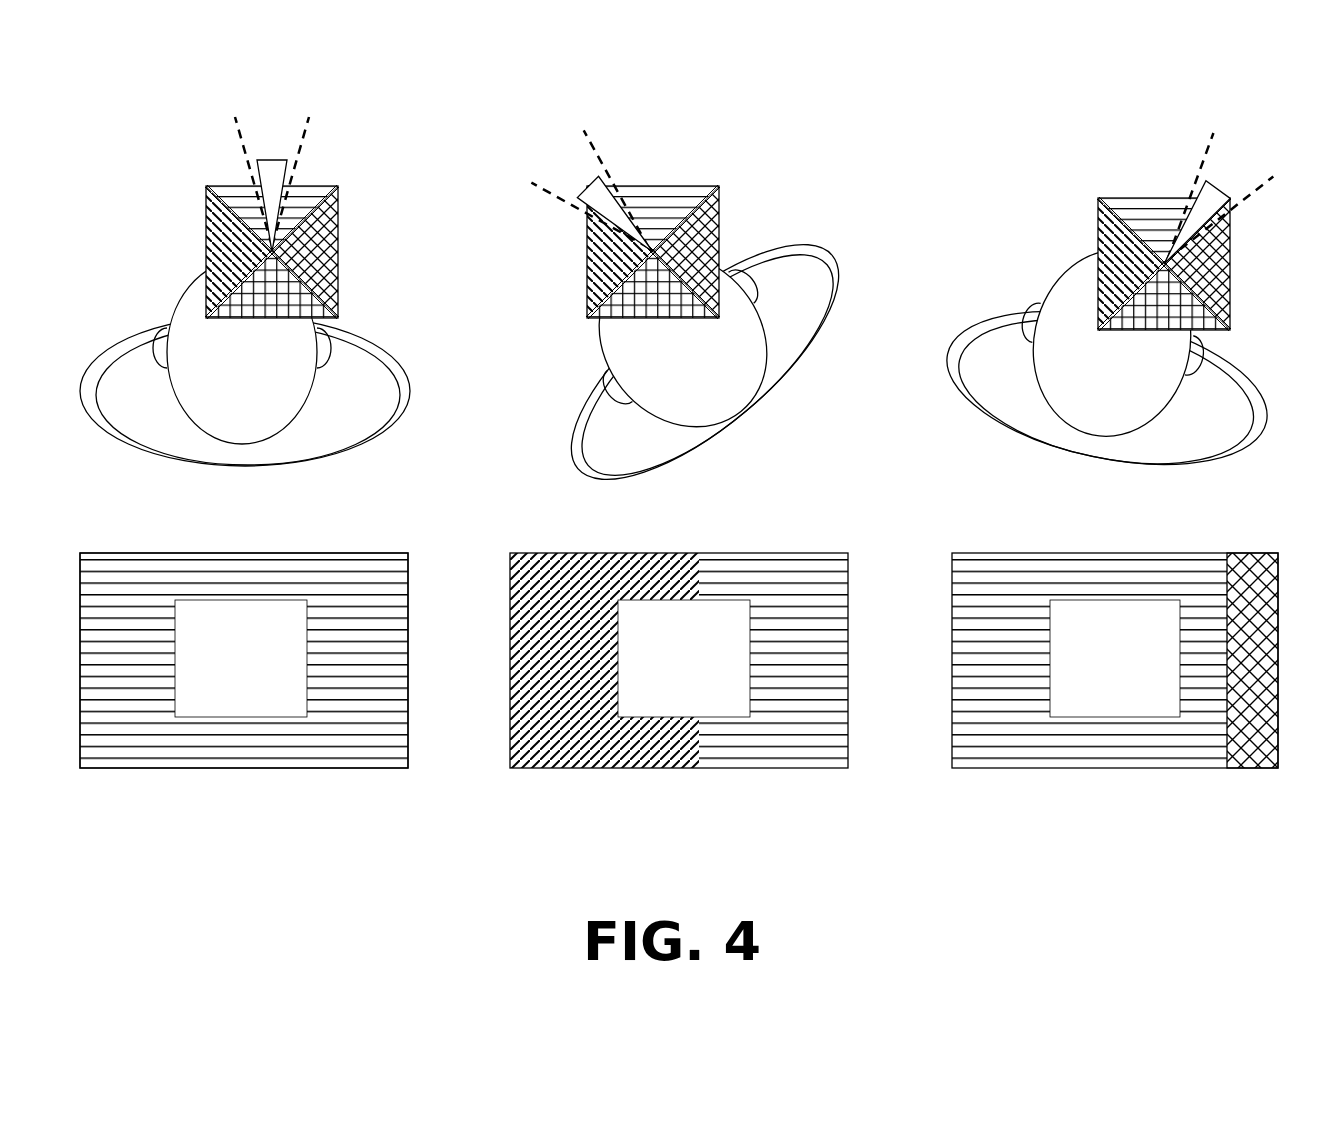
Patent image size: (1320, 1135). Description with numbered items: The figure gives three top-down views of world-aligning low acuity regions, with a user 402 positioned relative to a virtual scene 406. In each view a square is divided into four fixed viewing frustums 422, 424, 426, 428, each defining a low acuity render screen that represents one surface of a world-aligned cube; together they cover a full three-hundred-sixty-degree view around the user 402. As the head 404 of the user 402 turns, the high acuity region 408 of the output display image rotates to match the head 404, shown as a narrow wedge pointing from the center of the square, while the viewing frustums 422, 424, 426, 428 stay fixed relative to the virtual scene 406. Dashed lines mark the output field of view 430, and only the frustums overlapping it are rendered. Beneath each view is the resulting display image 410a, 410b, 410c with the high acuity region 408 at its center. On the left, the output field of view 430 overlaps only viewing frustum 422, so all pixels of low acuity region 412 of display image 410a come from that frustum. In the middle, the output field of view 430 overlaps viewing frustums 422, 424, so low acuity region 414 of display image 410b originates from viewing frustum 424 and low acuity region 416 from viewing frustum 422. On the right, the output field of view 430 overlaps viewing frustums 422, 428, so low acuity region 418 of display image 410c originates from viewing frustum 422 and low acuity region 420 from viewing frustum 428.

The user 402 is at (123, 353).
The head 404 is at (185, 292).
The virtual scene 406 is at (461, 63).
The high acuity region 408 is at (270, 180).
The display image 410a is at (168, 774).
The display image 410b is at (598, 774).
The display image 410c is at (1036, 774).
The low acuity region 412 is at (363, 758).
The low acuity region 414 is at (672, 758).
The low acuity region 416 is at (805, 758).
The low acuity region 418 is at (1163, 758).
The low acuity region 420 is at (1248, 758).
The viewing frustum 422 is at (232, 185).
The viewing frustum 424 is at (213, 227).
The viewing frustum 426 is at (317, 307).
The viewing frustum 428 is at (340, 205).
The output field of view 430 is at (270, 140).